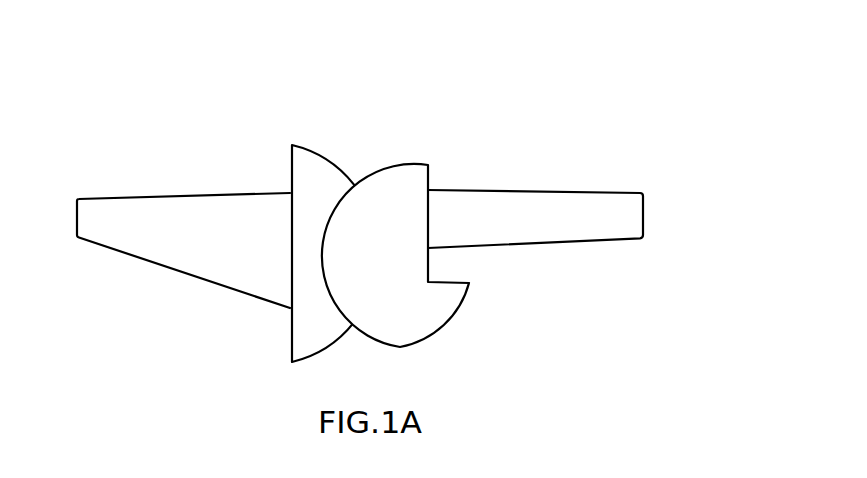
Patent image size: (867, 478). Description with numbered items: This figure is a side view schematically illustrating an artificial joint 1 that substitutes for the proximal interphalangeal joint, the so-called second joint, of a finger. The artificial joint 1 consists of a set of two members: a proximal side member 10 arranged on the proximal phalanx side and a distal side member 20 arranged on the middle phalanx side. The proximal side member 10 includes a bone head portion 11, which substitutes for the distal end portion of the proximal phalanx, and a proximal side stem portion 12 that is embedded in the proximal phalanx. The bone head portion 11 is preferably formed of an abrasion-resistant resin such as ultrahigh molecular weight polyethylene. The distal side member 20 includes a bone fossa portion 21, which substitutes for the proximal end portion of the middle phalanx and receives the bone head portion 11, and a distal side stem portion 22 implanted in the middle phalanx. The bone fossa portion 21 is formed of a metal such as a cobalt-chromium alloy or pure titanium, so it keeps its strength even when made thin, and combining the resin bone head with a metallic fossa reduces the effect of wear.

The artificial joint 1 is at (639, 30).
The proximal side member 10 is at (518, 87).
The bone head portion 11 is at (411, 158).
The proximal side stem portion 12 is at (597, 197).
The distal side member 20 is at (217, 101).
The bone fossa portion 21 is at (312, 143).
The distal side stem portion 22 is at (99, 198).